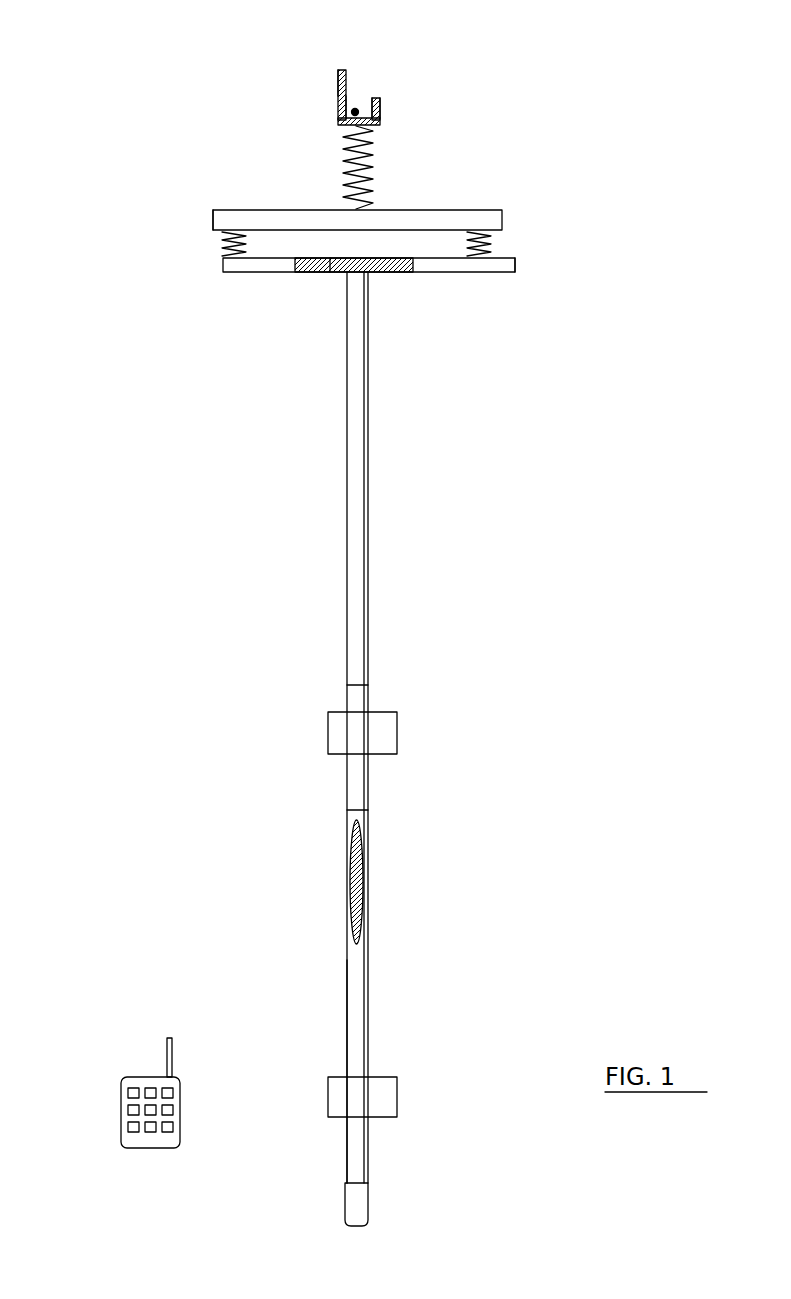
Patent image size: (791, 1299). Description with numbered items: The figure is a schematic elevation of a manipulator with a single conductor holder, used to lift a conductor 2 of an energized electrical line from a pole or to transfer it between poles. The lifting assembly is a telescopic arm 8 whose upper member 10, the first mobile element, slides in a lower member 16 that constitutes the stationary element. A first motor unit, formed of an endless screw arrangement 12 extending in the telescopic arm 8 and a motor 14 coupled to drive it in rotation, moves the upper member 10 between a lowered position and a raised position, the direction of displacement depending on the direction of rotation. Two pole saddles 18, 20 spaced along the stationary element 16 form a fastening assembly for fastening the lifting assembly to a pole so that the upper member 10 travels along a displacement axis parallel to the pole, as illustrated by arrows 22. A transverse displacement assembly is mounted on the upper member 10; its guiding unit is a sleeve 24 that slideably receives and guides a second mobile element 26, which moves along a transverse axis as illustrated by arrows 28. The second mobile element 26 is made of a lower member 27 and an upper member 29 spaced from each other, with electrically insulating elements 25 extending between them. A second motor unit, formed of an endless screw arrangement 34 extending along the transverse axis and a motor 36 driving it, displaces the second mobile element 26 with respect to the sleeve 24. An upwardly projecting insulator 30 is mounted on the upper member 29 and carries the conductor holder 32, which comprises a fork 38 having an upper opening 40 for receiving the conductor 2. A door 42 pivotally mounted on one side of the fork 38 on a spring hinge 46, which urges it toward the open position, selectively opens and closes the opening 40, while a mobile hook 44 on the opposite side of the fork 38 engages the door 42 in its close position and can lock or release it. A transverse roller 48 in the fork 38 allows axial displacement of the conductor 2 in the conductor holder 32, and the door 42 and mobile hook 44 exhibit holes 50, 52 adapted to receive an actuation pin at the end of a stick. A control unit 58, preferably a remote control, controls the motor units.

The conductor 2 is at (363, 92).
The telescopic arm 8 is at (325, 596).
The upper member 10 is at (352, 470).
The endless screw arrangement 12 is at (365, 895).
The motor 14 is at (362, 1201).
The lower member 16 is at (368, 1030).
The pole saddle 18 is at (392, 1100).
The pole saddle 20 is at (392, 722).
The arrows 22 is at (400, 415).
The sleeve 24 is at (335, 273).
The electrically insulating elements 25 is at (224, 247).
The second mobile element 26 is at (503, 216).
The lower member 27 is at (225, 264).
The arrows 28 is at (320, 190).
The upper member 29 is at (214, 212).
The insulator 30 is at (368, 164).
The conductor holder 32 is at (318, 110).
The endless screw arrangement 34 is at (300, 272).
The motor 36 is at (510, 270).
The fork 38 is at (338, 118).
The upper opening 40 is at (360, 70).
The door 42 is at (337, 83).
The mobile hook 44 is at (381, 100).
The spring hinge 46 is at (338, 104).
The transverse roller 48 is at (368, 100).
The hole 50 is at (334, 80).
The hole 52 is at (381, 104).
The control unit 58 is at (122, 1145).